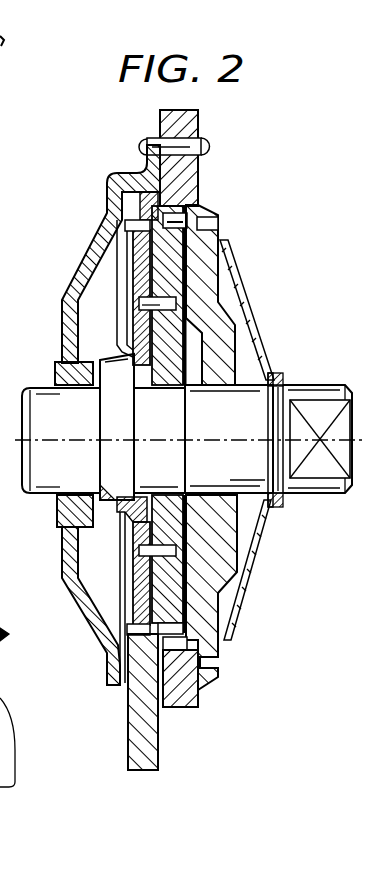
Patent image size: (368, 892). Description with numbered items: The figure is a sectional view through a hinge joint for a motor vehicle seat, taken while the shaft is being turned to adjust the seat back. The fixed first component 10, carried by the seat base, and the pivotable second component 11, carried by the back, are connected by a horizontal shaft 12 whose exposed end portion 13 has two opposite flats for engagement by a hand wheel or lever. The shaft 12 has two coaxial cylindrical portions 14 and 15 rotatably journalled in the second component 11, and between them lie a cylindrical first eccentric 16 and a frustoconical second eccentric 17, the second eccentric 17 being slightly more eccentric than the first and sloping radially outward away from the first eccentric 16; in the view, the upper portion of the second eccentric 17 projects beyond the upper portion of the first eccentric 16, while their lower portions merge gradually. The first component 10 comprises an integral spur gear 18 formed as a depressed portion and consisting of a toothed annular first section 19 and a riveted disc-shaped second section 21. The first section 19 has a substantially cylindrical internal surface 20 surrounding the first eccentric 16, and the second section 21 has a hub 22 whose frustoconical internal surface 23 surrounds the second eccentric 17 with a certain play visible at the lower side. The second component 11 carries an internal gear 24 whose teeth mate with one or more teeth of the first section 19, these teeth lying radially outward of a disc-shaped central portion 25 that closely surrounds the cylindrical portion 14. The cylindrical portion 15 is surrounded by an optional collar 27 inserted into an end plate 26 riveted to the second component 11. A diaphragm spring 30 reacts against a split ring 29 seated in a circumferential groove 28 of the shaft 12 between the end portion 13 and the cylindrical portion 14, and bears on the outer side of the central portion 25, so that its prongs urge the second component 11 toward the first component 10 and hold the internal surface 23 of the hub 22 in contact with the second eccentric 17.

The first component 10 is at (146, 730).
The second component 11 is at (191, 128).
The shaft 12 is at (337, 384).
The end portion 13 is at (325, 486).
The cylindrical portion 14 is at (239, 429).
The cylindrical portion 15 is at (64, 469).
The first eccentric 16 is at (171, 484).
The second eccentric 17 is at (129, 409).
The spur gear 18 is at (222, 642).
The first section 19 is at (165, 620).
The internal surface 20 is at (186, 505).
The second section 21 is at (134, 270).
The hub 22 is at (110, 528).
The internal surface 23 is at (42, 494).
The internal gear 24 is at (197, 678).
The central portion 25 is at (213, 267).
The end plate 26 is at (63, 312).
The collar 27 is at (58, 374).
The circumferential groove 28 is at (285, 395).
The split ring 29 is at (279, 382).
The diaphragm spring 30 is at (246, 297).